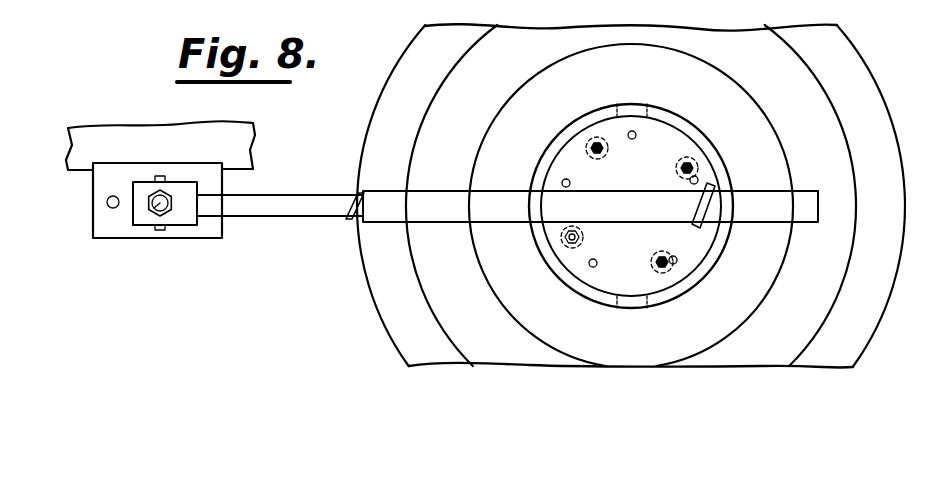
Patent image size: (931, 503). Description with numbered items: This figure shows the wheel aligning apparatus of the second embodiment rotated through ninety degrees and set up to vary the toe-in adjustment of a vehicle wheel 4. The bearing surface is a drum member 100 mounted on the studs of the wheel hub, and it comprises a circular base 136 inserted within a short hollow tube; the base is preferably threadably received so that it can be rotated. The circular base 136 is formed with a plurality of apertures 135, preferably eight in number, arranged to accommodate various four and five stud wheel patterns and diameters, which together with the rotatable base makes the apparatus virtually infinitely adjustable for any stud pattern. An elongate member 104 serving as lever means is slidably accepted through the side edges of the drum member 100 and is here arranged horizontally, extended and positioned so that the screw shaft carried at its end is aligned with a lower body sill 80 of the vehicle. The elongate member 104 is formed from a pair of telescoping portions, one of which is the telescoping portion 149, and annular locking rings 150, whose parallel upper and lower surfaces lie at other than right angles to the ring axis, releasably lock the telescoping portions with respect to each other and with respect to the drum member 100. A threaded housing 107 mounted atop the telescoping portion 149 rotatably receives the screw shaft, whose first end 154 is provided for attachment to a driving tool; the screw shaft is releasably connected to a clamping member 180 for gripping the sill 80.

The vehicle wheel 4 is at (410, 65).
The lower body sill 80 is at (138, 144).
The drum member 100 is at (733, 149).
The elongate member 104 is at (428, 222).
The threaded housing 107 is at (179, 216).
The apertures 135 is at (636, 133).
The circular base 136 is at (643, 282).
The telescoping portion 149 is at (285, 197).
The annular locking ring 150 is at (349, 220).
The first end 154 is at (154, 204).
The clamping member 180 is at (232, 250).